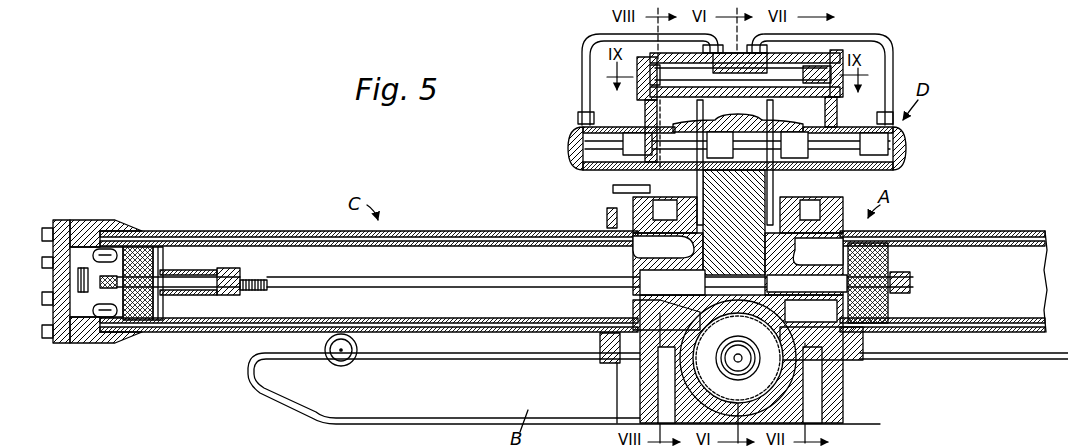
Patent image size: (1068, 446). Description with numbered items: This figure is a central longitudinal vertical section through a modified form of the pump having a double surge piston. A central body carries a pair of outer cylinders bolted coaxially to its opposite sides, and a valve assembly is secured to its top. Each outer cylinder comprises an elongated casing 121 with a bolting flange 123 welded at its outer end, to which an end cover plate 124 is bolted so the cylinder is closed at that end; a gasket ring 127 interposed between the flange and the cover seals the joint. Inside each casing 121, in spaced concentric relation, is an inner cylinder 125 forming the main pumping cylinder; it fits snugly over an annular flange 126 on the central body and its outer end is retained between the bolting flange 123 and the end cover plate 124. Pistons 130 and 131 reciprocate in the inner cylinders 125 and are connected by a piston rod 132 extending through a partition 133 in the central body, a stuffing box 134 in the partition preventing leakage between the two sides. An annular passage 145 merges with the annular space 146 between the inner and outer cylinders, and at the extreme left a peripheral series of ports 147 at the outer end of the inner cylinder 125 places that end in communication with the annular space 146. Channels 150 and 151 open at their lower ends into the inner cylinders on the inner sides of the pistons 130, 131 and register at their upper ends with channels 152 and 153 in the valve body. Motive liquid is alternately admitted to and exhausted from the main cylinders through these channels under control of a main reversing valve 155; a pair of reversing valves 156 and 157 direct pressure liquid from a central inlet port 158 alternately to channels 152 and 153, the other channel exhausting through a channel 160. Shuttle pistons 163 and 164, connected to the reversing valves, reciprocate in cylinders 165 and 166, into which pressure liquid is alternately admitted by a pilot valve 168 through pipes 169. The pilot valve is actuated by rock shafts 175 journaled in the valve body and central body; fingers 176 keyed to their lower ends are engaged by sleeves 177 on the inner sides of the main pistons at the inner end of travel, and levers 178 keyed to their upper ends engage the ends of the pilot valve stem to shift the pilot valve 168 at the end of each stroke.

The elongated casing 121 is at (303, 240).
The bolting flange 123 is at (97, 225).
The end cover plate 124 is at (63, 230).
The inner cylinder 125 is at (297, 245).
The annular flange 126 is at (637, 257).
The gasket ring 127 is at (53, 248).
The piston 130 is at (147, 247).
The piston 131 is at (875, 307).
The piston rod 132 is at (461, 282).
The partition 133 is at (734, 166).
The stuffing box 134 is at (720, 270).
The annular passage 145 is at (667, 323).
The annular space 146 is at (417, 237).
The ports 147 is at (110, 252).
The channel 150 is at (717, 128).
The channel 151 is at (813, 182).
The channel 152 is at (652, 207).
The channel 153 is at (780, 128).
The main reversing valve 155 is at (750, 130).
The main reversing valve 156 is at (722, 145).
The main reversing valve 157 is at (796, 145).
The central inlet port 158 is at (734, 222).
The channel 160 is at (663, 107).
The shuttle piston 163 is at (638, 144).
The shuttle piston 164 is at (875, 144).
The cylinder 165 is at (578, 147).
The cylinder 166 is at (850, 140).
The pilot valve 168 is at (770, 52).
The pipes 169 is at (604, 42).
The rock shaft 175 is at (652, 178).
The finger 176 is at (690, 52).
The sleeve 177 is at (197, 270).
The lever 178 is at (812, 72).